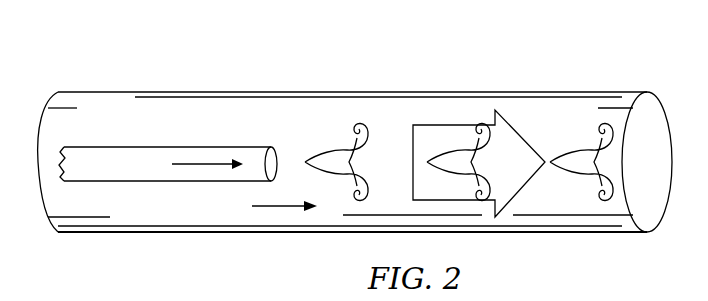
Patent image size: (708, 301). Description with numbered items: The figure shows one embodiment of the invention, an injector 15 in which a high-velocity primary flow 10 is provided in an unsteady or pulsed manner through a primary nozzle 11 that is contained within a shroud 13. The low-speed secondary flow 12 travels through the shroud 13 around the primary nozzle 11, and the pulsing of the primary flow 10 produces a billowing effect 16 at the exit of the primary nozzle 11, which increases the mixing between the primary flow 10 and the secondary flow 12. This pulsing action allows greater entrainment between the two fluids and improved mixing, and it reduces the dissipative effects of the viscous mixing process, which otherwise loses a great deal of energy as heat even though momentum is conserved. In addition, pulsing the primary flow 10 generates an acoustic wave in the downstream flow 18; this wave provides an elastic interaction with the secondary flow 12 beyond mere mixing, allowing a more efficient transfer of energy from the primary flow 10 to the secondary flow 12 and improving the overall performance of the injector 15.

The injector 15 is at (146, 70).
The shroud 13 is at (98, 234).
The primary nozzle 11 is at (130, 147).
The primary flow 10 is at (192, 163).
The secondary flow 12 is at (282, 208).
The billowing effect 16 is at (342, 150).
The downstream flow 18 is at (449, 124).